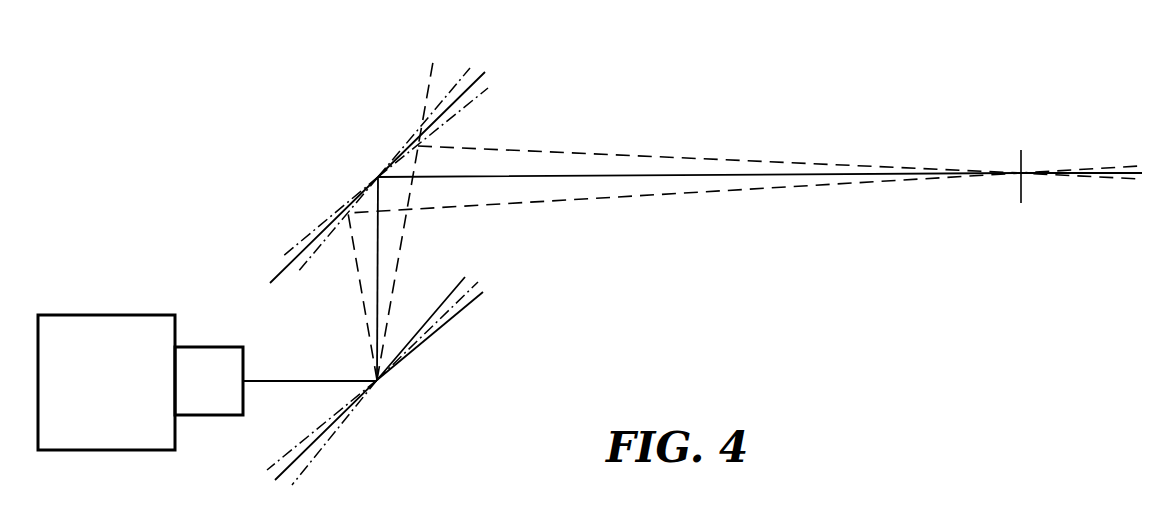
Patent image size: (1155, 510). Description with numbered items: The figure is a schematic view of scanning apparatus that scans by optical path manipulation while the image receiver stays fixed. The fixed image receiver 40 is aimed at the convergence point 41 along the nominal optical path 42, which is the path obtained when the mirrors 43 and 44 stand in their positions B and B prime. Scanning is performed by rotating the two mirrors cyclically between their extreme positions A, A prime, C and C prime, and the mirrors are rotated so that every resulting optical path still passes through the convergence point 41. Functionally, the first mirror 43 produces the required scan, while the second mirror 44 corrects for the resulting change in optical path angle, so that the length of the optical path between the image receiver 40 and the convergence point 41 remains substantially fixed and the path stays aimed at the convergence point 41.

The image receiver 40 is at (115, 315).
The convergence point 41 is at (1023, 171).
The nominal optical path 42 is at (515, 176).
The mirror 43 is at (383, 384).
The mirror 44 is at (377, 177).